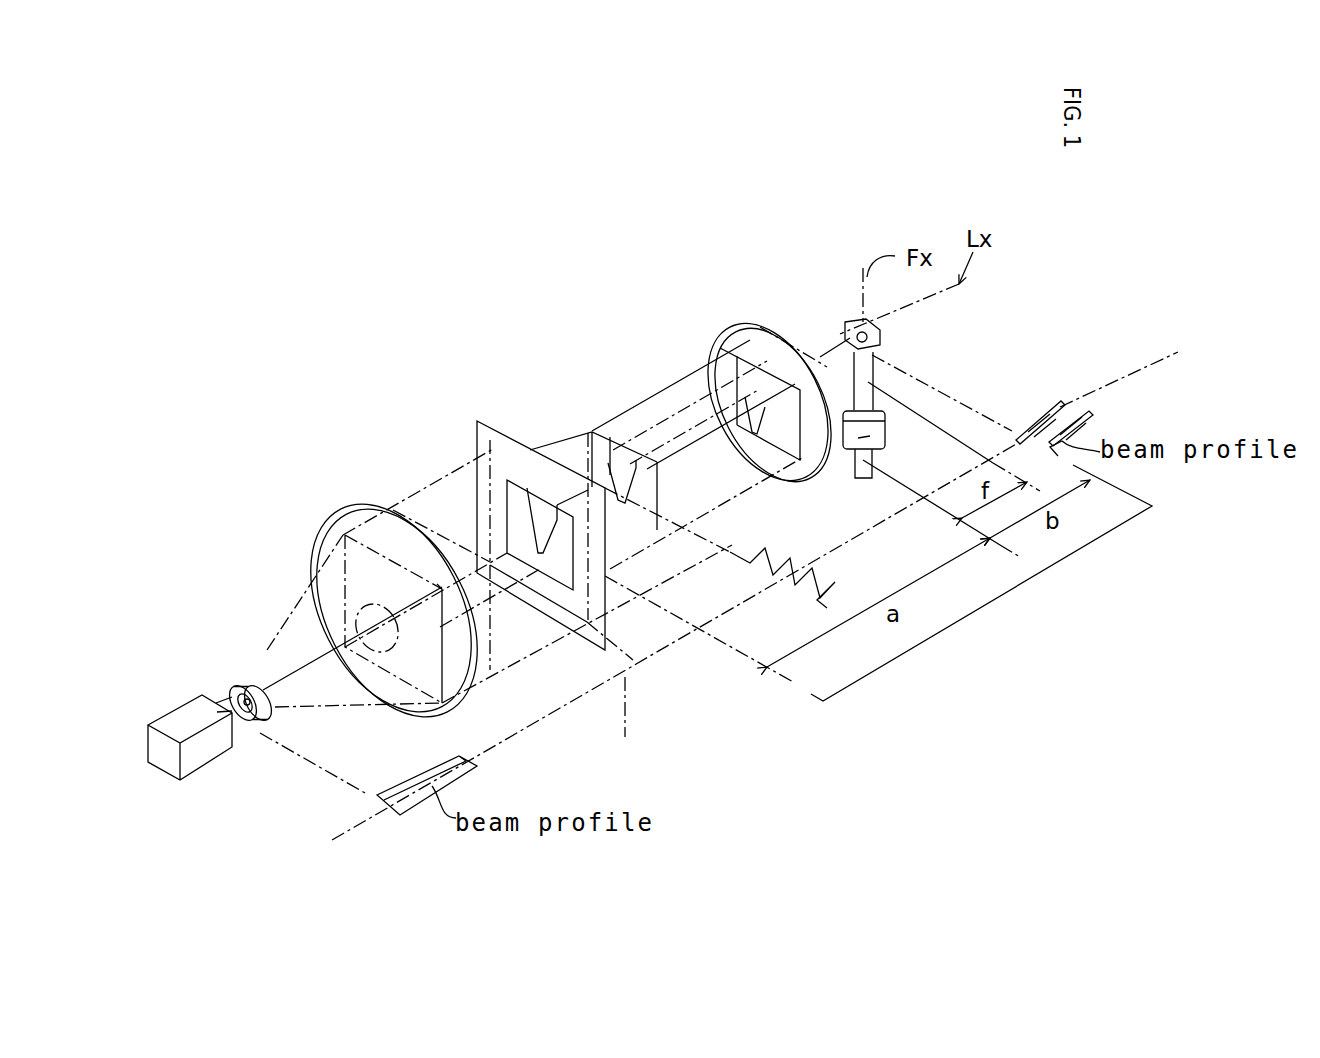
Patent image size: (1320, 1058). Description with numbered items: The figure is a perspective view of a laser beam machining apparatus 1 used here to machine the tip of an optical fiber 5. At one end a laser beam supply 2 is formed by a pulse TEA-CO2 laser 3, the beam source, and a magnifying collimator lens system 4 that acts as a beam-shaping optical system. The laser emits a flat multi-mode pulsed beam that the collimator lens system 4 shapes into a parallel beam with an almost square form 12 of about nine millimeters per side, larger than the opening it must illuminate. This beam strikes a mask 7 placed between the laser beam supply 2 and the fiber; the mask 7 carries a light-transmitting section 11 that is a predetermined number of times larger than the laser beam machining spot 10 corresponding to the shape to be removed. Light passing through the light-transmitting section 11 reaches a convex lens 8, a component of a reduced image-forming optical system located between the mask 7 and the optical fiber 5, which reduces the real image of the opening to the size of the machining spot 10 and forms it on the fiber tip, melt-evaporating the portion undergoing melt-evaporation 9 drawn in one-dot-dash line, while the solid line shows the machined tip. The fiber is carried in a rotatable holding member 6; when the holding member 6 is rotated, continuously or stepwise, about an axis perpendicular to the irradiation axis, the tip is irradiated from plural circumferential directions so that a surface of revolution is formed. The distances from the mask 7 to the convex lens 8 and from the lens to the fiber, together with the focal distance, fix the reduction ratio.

The laser beam machining apparatus 1 is at (593, 370).
The laser beam supply 2 is at (120, 578).
The pulse TEA-CO2 laser 3 is at (178, 718).
The magnifying collimator lens system 4 is at (252, 682).
The optical fiber 5 is at (876, 377).
The rotatable holding member 6 is at (863, 476).
The mask 7 is at (484, 437).
The convex lens 8 is at (727, 343).
The portion undergoing melt-evaporation 9 is at (876, 323).
The laser beam machining spot 10 is at (856, 332).
The light-transmitting section 11 is at (500, 520).
The almost square form 12 is at (550, 657).